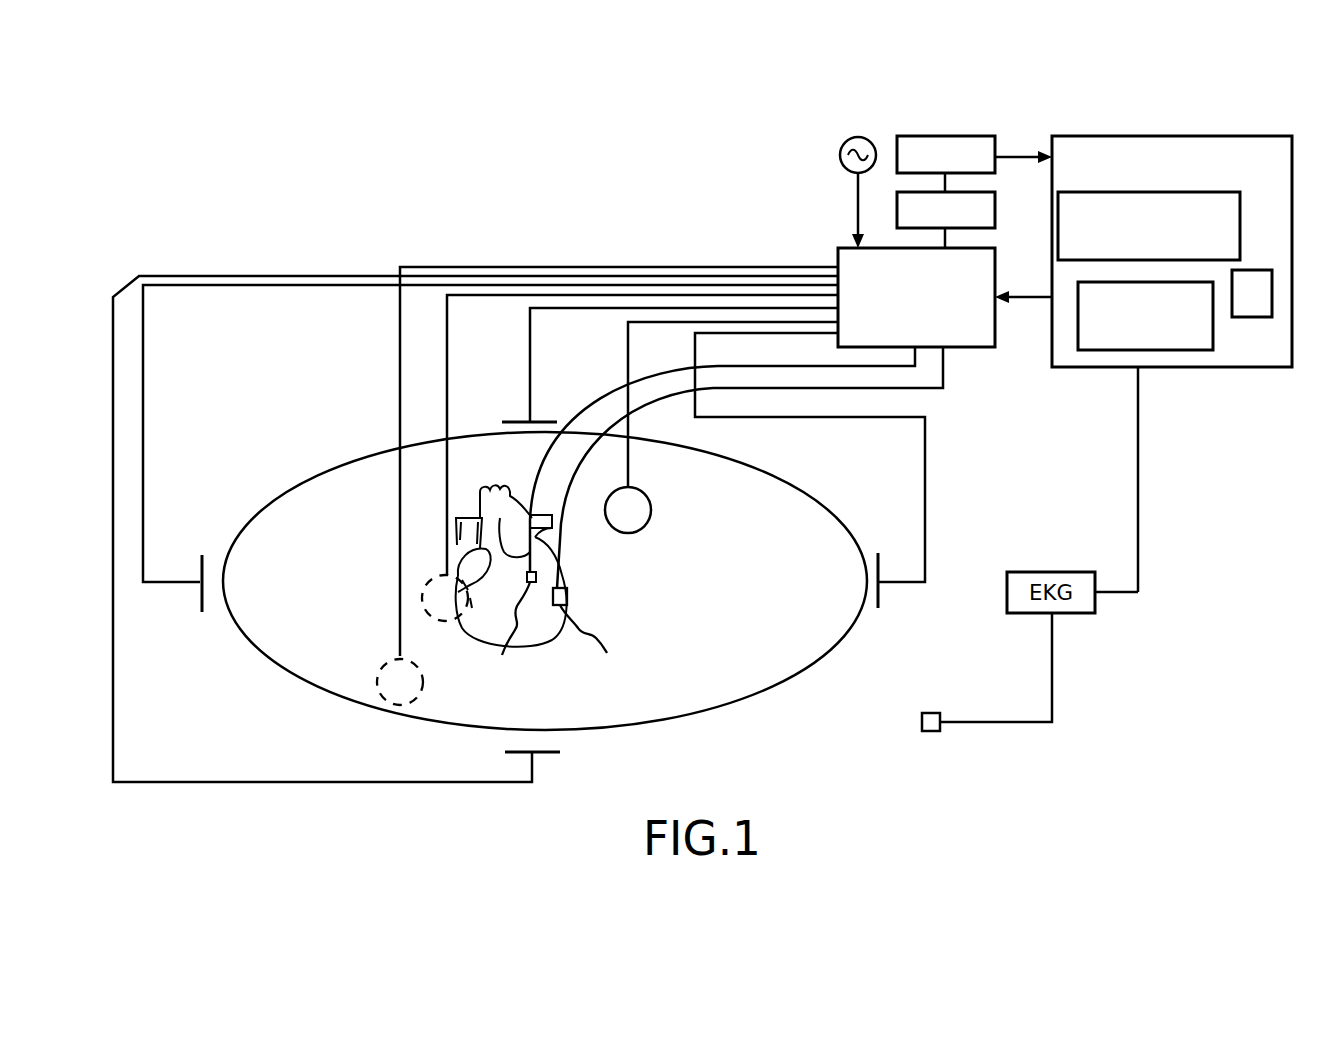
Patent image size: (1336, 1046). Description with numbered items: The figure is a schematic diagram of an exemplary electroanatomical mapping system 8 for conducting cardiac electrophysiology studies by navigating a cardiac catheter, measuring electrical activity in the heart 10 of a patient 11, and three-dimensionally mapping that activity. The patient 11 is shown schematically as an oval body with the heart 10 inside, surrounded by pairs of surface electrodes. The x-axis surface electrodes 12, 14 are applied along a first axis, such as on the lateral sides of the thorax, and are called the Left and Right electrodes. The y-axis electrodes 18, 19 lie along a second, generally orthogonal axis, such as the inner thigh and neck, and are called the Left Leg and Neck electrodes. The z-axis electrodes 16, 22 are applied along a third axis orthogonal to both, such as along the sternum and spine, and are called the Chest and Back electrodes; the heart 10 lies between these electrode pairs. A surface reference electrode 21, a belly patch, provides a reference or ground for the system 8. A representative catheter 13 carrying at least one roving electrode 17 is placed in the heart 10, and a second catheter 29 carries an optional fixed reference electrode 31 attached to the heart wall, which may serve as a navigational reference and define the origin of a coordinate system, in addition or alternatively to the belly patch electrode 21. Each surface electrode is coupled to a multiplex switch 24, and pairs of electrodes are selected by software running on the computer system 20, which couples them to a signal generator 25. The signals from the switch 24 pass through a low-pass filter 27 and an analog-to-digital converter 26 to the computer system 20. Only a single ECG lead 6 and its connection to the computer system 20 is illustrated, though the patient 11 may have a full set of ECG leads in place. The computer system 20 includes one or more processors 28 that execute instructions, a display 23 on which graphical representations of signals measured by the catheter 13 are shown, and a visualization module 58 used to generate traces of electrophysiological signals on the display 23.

The electroanatomical mapping system 8 is at (196, 185).
The patient 11 is at (790, 470).
The multiplex switch 24 is at (916, 297).
The analog to digital converter 26 is at (962, 136).
The low pass filter 27 is at (995, 201).
The signal generator 25 is at (845, 146).
The computer system 20 is at (1172, 364).
The processors 28 is at (1149, 226).
The display 23 is at (1145, 316).
The visualization module 58 is at (1252, 293).
The ECG lead 6 is at (930, 732).
The x-axis surface electrode 14 is at (534, 759).
The y-axis surface electrode 18 is at (200, 598).
The surface reference electrode 21 is at (400, 596).
The z-axis surface electrode 22 is at (447, 350).
The x-axis surface electrode 12 is at (523, 421).
The z-axis surface electrode 16 is at (630, 465).
The y-axis surface electrode 19 is at (880, 594).
The second catheter 29 is at (547, 452).
The catheter 13 is at (945, 372).
The heart 10 is at (568, 594).
The fixed reference electrode 31 is at (509, 634).
The catheter electrode 17 is at (589, 645).